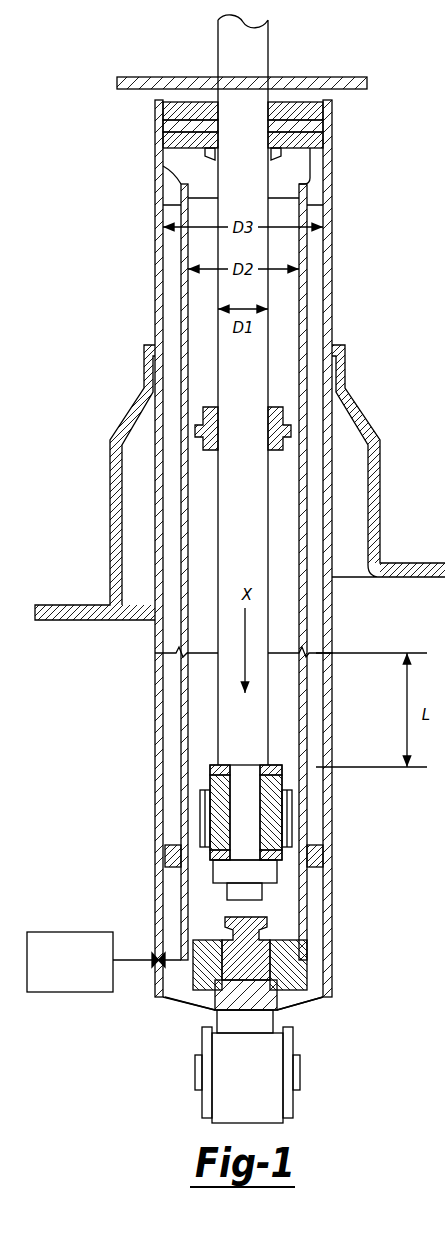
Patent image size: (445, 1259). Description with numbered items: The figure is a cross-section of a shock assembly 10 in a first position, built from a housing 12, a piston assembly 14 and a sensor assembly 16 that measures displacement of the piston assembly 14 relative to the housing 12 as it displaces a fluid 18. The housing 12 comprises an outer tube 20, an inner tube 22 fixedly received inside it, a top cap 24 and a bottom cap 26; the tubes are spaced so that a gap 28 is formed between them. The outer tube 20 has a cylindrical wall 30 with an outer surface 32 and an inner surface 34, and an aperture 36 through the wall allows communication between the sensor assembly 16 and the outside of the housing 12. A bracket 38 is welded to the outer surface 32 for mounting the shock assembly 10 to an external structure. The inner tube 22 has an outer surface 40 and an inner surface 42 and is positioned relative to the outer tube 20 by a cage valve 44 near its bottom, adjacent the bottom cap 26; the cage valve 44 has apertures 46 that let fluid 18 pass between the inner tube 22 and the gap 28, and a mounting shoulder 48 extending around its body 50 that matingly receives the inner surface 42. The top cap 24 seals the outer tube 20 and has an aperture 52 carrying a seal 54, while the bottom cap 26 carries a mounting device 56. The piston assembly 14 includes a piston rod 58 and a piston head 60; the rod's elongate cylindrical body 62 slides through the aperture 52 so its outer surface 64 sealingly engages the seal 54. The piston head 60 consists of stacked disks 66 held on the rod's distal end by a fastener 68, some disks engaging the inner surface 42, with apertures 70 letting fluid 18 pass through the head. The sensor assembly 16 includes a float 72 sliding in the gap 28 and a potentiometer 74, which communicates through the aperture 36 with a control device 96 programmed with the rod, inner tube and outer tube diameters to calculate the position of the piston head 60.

The shock assembly 10 is at (82, 170).
The housing 12 is at (333, 197).
The piston assembly 14 is at (285, 742).
The sensor assembly 16 is at (163, 893).
The fluid 18 is at (195, 720).
The outer tube 20 is at (335, 247).
The inner tube 22 is at (188, 290).
The top cap 24 is at (330, 110).
The bottom cap 26 is at (313, 1000).
The gap 28 is at (160, 653).
The cylindrical wall 30 is at (332, 326).
The outer surface 32 is at (333, 302).
The inner surface 34 is at (300, 213).
The aperture 36 is at (162, 968).
The bracket 38 is at (112, 545).
The outer surface 40 is at (182, 215).
The inner surface 42 is at (190, 355).
The cage valve 44 is at (300, 980).
The apertures 46 is at (210, 960).
The mounting shoulder 48 is at (302, 960).
The body 50 is at (250, 975).
The aperture 52 is at (300, 125).
The seal 54 is at (178, 140).
The mounting device 56 is at (255, 1097).
The piston rod 58 is at (270, 512).
The piston head 60 is at (285, 815).
The cylindrical body 62 is at (253, 572).
The outer surface 64 is at (240, 353).
The disks 66 is at (213, 785).
The fastener 68 is at (270, 875).
The apertures 70 is at (290, 822).
The float 72 is at (170, 855).
The potentiometer 74 is at (180, 915).
The control device 96 is at (60, 972).